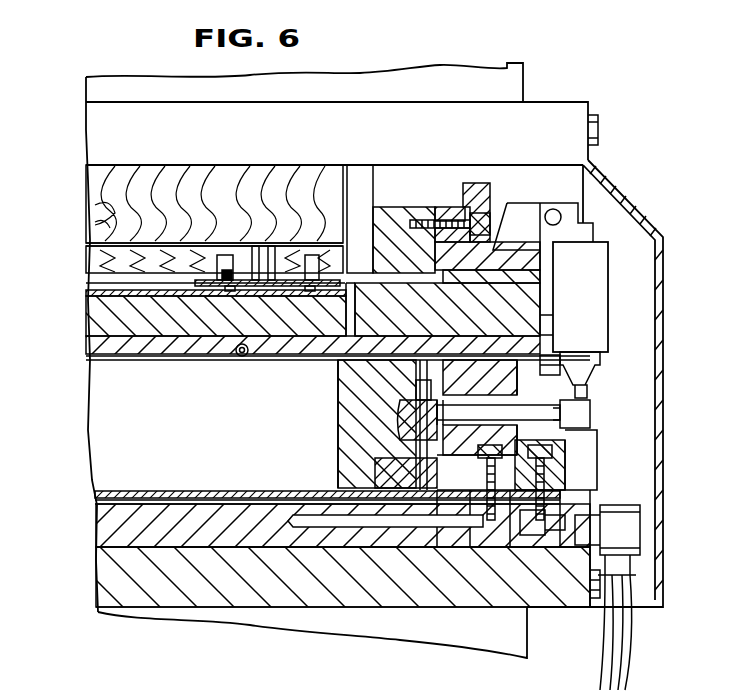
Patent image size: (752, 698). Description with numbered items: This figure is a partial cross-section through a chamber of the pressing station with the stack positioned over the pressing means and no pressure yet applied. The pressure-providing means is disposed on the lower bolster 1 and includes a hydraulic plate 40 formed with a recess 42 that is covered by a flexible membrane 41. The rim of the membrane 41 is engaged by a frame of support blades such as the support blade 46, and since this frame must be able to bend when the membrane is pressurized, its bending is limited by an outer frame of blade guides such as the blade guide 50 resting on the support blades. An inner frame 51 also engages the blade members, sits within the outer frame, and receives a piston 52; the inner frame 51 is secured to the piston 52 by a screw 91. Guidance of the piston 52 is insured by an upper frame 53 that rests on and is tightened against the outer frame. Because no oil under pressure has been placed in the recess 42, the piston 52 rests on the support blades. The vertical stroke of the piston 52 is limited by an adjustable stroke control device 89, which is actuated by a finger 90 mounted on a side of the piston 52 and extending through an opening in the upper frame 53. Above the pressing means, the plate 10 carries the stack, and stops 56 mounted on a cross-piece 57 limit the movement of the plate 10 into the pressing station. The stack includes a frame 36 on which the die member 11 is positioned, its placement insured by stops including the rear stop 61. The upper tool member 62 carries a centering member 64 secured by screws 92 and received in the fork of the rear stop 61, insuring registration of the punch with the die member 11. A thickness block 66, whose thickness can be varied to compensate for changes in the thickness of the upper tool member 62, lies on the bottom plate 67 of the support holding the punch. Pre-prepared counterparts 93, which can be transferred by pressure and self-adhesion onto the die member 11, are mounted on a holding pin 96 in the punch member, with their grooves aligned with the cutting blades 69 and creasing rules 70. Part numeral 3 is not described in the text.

The lower bolster 1 is at (546, 598).
The outer shell 3 is at (103, 137).
The plate 10 is at (128, 346).
The die member 11 is at (100, 291).
The frame 36 is at (100, 318).
The hydraulic plate 40 is at (105, 541).
The flexible membrane 41 is at (98, 493).
The recess 42 is at (98, 501).
The support blade 46 is at (480, 492).
The blade guide 50 is at (470, 480).
The inner frame 51 is at (395, 475).
The piston 52 is at (100, 412).
The upper frame 53 is at (520, 433).
The stop 56 is at (590, 485).
The cross-piece 57 is at (570, 470).
The rear stop 61 is at (530, 200).
The upper tool member 62 is at (100, 268).
The centering member 64 is at (478, 197).
The thickness block 66 is at (100, 188).
The bottom plate 67 is at (95, 245).
The cutting blades 69 is at (272, 272).
The creasing rules 70 is at (256, 270).
The adjustable stroke control device 89 is at (600, 282).
The finger 90 is at (583, 418).
The screw 91 is at (350, 392).
The screws 92 is at (493, 245).
The pre-prepared counterparts 93 is at (204, 292).
The holding pin 96 is at (228, 262).